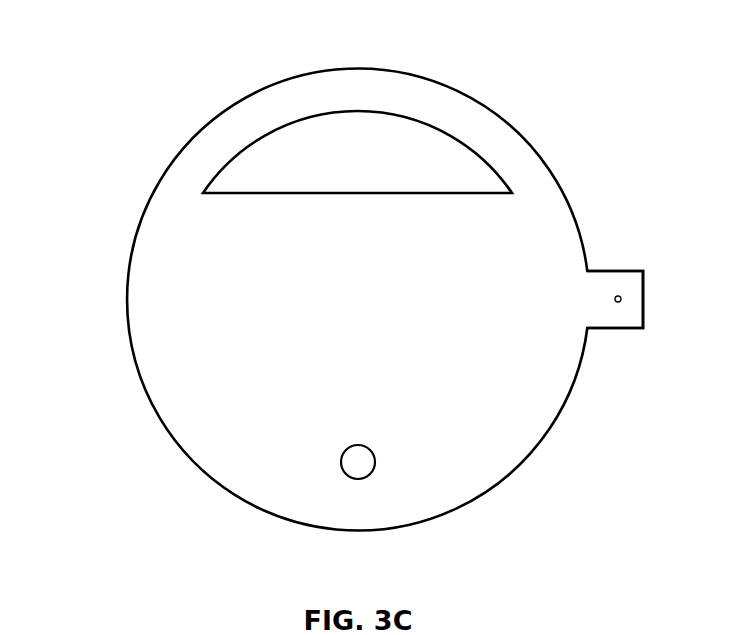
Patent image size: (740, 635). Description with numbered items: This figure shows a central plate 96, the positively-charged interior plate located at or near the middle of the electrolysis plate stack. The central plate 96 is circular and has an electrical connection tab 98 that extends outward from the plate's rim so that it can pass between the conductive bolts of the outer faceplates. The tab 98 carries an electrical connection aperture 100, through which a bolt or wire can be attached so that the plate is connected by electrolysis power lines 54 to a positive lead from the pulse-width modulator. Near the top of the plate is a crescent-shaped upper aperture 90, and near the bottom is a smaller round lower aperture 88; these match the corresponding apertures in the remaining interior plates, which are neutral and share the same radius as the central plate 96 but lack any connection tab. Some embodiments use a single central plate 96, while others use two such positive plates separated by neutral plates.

The central plate 96 is at (147, 106).
The crescent-shaped upper aperture 90 is at (438, 178).
The electrical connection tab 98 is at (615, 271).
The electrical connection aperture 100 is at (622, 298).
The electrolysis power lines 54 is at (618, 304).
The lower aperture 88 is at (357, 461).